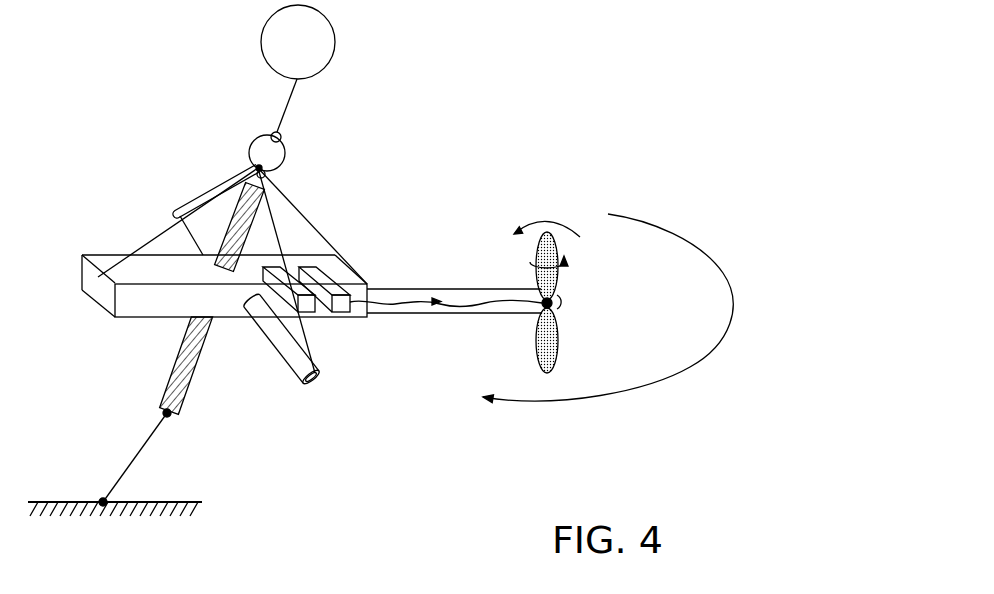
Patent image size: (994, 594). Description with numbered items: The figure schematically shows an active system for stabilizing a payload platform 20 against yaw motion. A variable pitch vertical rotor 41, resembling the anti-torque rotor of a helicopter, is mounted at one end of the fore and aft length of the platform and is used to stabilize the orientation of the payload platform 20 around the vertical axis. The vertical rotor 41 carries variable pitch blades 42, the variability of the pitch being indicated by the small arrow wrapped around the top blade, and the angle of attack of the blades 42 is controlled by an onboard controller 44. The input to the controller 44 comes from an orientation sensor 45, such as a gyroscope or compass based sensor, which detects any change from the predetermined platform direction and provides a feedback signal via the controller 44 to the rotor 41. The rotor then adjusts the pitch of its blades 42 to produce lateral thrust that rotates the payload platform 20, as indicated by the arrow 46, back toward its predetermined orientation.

The payload platform 20 is at (92, 280).
The variable pitch vertical rotor 41 is at (577, 294).
The variable pitch blades 42 is at (557, 333).
The onboard controller 44 is at (348, 313).
The orientation sensor 45 is at (308, 313).
The arrow indicating platform rotation 46 is at (530, 435).